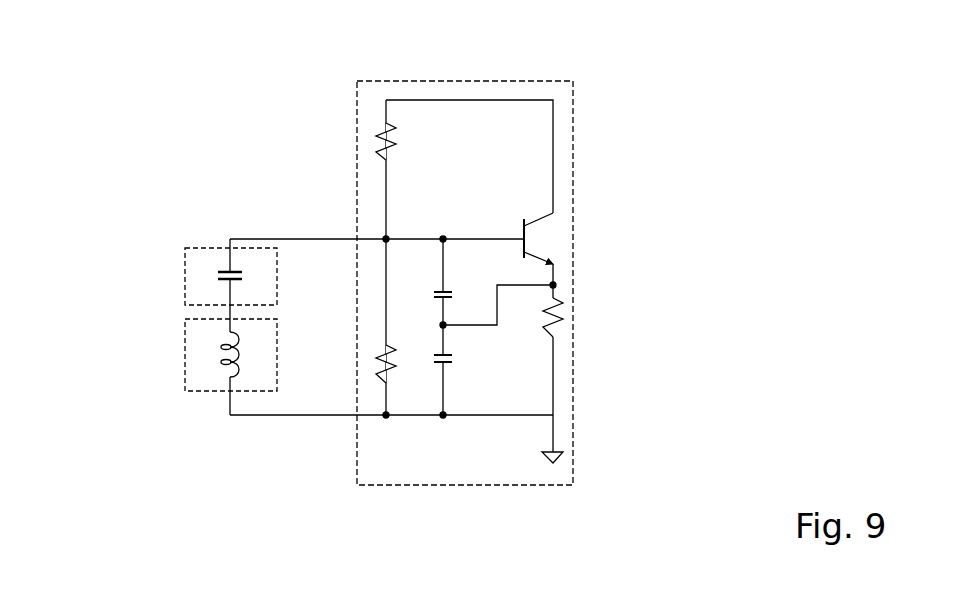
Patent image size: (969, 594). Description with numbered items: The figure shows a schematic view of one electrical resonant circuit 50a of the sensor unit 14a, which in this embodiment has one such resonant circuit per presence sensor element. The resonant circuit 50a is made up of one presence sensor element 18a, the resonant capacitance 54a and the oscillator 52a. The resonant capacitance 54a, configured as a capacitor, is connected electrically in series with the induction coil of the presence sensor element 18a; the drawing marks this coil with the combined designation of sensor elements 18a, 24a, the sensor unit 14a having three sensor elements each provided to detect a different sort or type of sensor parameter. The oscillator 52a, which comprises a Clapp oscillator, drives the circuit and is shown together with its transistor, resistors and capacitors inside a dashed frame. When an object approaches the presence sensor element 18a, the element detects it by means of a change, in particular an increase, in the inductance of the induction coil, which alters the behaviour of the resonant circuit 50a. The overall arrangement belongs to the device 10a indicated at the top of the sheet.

The sensor device 10a is at (757, 78).
The sensor unit 14a is at (693, 125).
The electrical resonant circuit 50a is at (637, 172).
The oscillator 52a is at (357, 135).
The resonant capacitance 54a is at (185, 285).
The presence sensor element 18a is at (156, 355).
The sensor element 24a is at (224, 370).